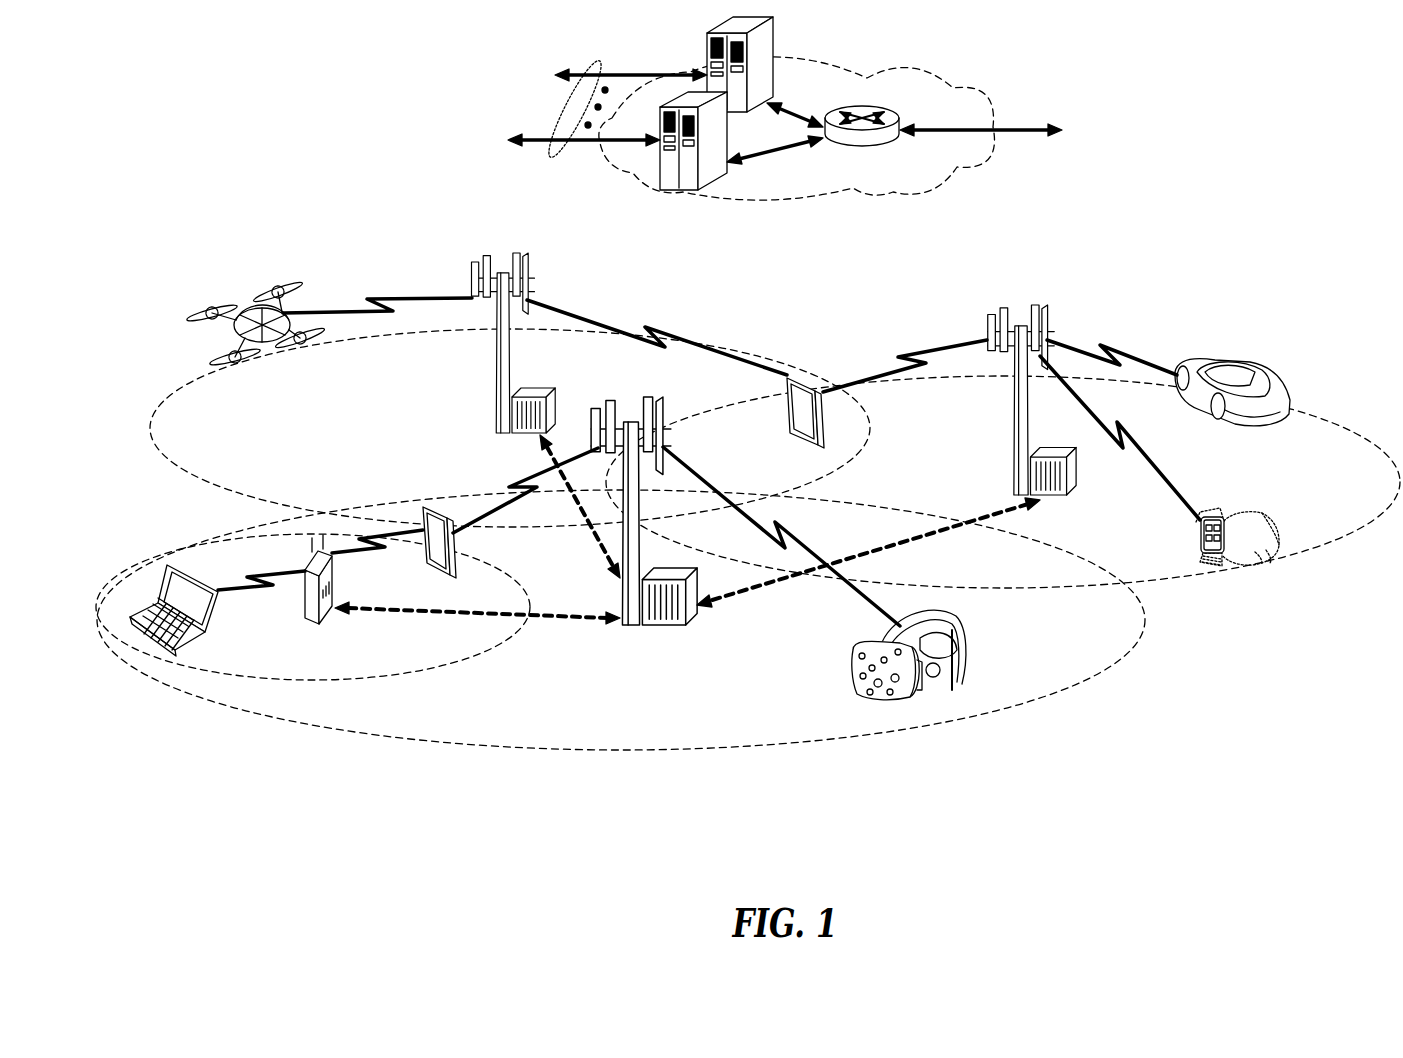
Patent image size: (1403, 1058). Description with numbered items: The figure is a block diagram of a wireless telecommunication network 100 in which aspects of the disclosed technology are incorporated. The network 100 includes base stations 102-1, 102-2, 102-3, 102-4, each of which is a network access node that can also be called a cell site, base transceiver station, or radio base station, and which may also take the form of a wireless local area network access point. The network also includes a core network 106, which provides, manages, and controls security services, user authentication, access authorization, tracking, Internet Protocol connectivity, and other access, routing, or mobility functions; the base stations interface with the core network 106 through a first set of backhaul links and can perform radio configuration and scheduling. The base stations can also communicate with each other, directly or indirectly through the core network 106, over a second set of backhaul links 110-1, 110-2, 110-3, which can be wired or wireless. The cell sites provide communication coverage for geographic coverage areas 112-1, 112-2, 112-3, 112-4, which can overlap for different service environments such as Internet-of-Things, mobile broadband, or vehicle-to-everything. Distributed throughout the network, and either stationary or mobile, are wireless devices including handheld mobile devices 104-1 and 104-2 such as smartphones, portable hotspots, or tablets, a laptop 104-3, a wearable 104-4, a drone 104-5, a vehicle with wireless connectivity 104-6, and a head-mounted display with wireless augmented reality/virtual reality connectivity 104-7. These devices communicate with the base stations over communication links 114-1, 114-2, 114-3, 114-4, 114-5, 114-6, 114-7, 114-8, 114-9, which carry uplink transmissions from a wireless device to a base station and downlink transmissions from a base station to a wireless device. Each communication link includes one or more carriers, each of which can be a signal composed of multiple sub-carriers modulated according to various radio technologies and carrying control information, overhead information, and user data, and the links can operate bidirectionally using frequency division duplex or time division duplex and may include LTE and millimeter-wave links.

The wireless telecommunication network 100 is at (1306, 118).
The core network 106 is at (895, 194).
The base station 102-1 is at (630, 628).
The base station 102-2 is at (494, 382).
The base station 102-3 is at (1012, 415).
The base station 102-4 is at (306, 612).
The handheld mobile device 104-1 is at (455, 555).
The handheld mobile device 104-2 is at (787, 415).
The laptop 104-3 is at (152, 640).
The wearable 104-4 is at (1218, 516).
The drone 104-5 is at (265, 347).
The vehicle with wireless connectivity 104-6 is at (1255, 367).
The head-mounted display 104-7 is at (965, 640).
The backhaul link 110-1 is at (377, 612).
The backhaul link 110-2 is at (935, 532).
The backhaul link 110-3 is at (582, 535).
The geographic coverage area 112-1 is at (560, 755).
The geographic coverage area 112-2 is at (440, 668).
The geographic coverage area 112-3 is at (215, 485).
The geographic coverage area 112-4 is at (1310, 422).
The communication link 114-1 is at (785, 540).
The communication link 114-2 is at (520, 480).
The communication link 114-3 is at (258, 588).
The communication link 114-4 is at (376, 552).
The communication link 114-5 is at (380, 300).
The communication link 114-6 is at (665, 336).
The communication link 114-7 is at (905, 355).
The communication link 114-8 is at (1140, 448).
The communication link 114-9 is at (1110, 350).